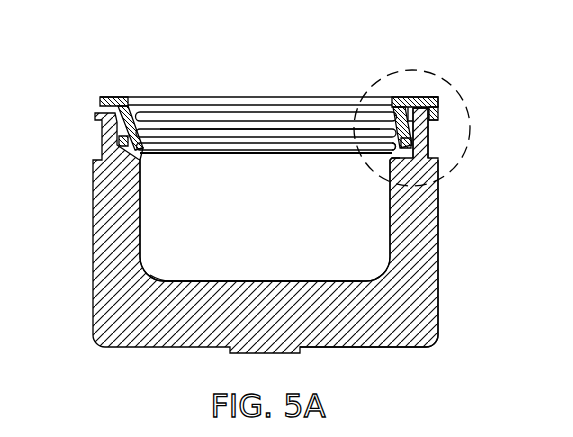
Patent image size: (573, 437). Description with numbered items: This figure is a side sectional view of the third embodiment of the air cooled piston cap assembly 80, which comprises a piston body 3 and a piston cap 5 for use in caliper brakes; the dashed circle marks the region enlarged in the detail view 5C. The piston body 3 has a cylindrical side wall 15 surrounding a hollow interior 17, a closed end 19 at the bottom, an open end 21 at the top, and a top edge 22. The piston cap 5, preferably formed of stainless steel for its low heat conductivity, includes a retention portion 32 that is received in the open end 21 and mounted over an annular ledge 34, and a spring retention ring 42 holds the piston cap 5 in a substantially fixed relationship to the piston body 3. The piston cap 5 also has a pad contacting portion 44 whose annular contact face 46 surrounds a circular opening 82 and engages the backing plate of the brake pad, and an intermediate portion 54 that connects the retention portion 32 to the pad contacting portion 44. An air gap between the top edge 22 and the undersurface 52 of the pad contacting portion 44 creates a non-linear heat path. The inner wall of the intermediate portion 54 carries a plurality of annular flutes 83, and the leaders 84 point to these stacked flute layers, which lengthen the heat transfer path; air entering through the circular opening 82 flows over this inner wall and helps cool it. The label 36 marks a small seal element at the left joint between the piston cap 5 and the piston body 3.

The piston body 3 is at (92, 256).
The piston cap 5 is at (440, 96).
The cylindrical side wall 15 is at (438, 258).
The hollow interior 17 is at (273, 223).
The closed end 19 is at (200, 286).
The open end 21 is at (378, 112).
The top edge 22 is at (433, 108).
The retention portion 32 is at (142, 154).
The annular ledge 34 is at (388, 156).
The left seal 36 is at (122, 139).
The spring retention ring 42 is at (428, 143).
The pad contacting portion 44 is at (99, 100).
The annular contact face 46 is at (415, 97).
The undersurface 52 is at (430, 102).
The intermediate portion 54 is at (438, 117).
The piston cap assembly 80 is at (98, 66).
The circular opening 82 is at (380, 165).
The annular flutes 83 is at (217, 125).
The film layers 84 is at (147, 148).
The detail view circle 5C is at (463, 171).